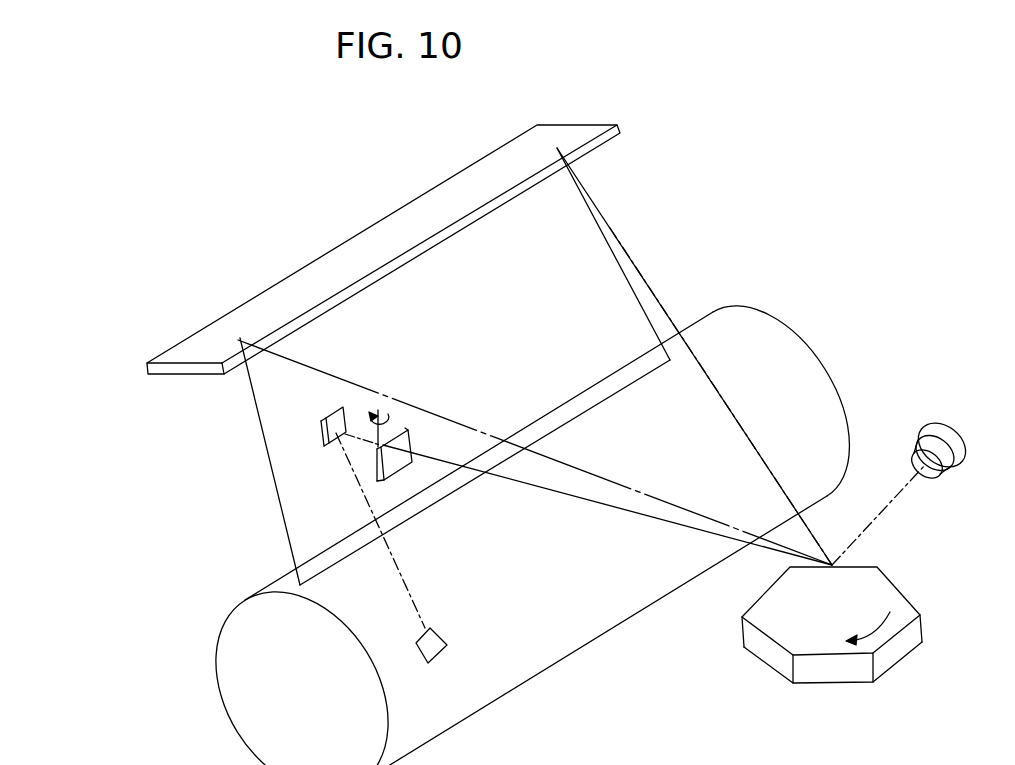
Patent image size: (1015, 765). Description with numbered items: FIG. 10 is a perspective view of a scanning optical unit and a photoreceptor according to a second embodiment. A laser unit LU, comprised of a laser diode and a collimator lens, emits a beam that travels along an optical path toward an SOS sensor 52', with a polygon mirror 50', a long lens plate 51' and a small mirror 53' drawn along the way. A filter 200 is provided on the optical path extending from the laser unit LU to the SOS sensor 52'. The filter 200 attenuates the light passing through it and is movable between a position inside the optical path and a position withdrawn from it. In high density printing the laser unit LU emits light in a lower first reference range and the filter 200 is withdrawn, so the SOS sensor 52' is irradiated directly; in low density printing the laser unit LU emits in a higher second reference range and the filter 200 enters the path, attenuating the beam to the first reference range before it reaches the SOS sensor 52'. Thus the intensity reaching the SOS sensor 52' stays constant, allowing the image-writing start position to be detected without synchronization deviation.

The scanning lens plate 51' is at (404, 237).
The rotating mirror 53' is at (364, 405).
The filter 200 is at (418, 432).
The SOS sensor 52' is at (461, 632).
The polygon mirror 50' is at (868, 625).
The laser unit LU is at (937, 420).